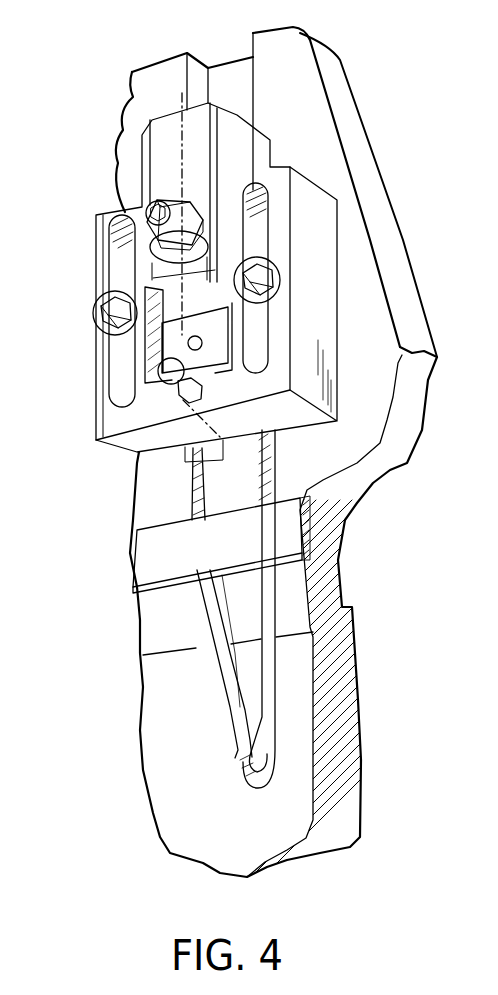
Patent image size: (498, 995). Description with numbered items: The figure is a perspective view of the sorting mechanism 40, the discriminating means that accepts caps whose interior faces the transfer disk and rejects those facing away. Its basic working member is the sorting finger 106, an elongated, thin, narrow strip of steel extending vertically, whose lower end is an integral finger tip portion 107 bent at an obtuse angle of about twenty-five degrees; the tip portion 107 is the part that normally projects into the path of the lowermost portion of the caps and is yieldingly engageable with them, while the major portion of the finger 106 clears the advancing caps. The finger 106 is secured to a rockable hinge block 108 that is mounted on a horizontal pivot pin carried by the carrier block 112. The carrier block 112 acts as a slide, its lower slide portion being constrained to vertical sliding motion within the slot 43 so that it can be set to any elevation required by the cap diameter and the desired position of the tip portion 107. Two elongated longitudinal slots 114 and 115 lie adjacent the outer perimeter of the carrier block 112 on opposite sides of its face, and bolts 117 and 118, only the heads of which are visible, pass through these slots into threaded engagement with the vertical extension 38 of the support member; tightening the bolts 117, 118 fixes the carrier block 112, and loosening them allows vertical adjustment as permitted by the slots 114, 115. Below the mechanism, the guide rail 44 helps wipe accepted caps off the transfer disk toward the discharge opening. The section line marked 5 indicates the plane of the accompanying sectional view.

The vertical extension 38 is at (425, 315).
The sorting mechanism 40 is at (75, 261).
The slot 43 is at (193, 84).
The guide rail 44 is at (137, 535).
The sorting finger 106 is at (272, 467).
The finger tip portion 107 is at (233, 757).
The hinge block 108 is at (210, 350).
The carrier block 112 is at (308, 178).
The elongated longitudinal slot 114 is at (120, 245).
The elongated longitudinal slot 115 is at (268, 212).
The bolt 117 is at (96, 308).
The bolt 118 is at (280, 280).
The section line 5- 5 is at (179, 94).